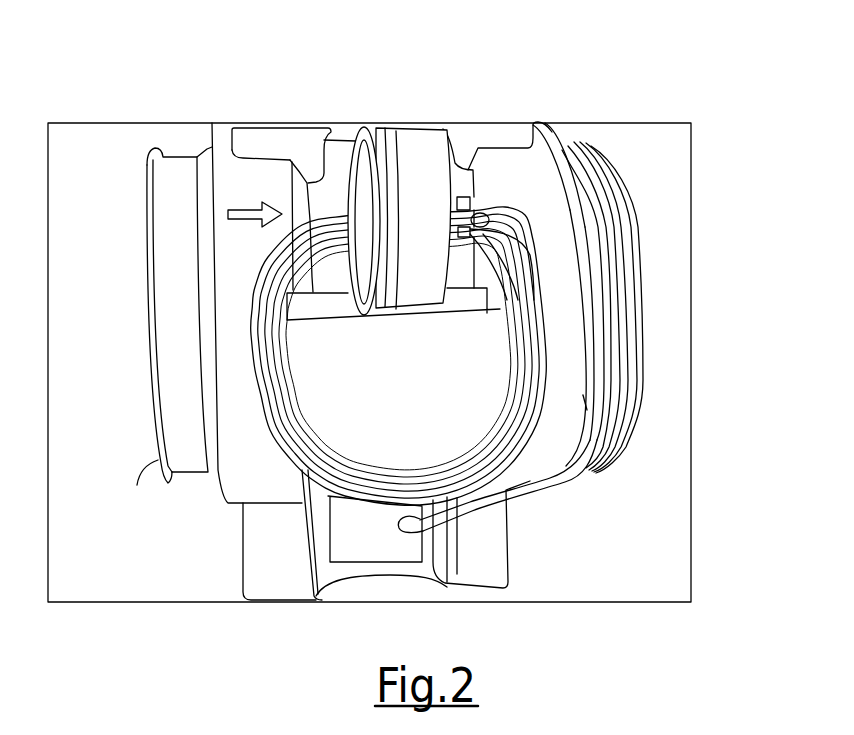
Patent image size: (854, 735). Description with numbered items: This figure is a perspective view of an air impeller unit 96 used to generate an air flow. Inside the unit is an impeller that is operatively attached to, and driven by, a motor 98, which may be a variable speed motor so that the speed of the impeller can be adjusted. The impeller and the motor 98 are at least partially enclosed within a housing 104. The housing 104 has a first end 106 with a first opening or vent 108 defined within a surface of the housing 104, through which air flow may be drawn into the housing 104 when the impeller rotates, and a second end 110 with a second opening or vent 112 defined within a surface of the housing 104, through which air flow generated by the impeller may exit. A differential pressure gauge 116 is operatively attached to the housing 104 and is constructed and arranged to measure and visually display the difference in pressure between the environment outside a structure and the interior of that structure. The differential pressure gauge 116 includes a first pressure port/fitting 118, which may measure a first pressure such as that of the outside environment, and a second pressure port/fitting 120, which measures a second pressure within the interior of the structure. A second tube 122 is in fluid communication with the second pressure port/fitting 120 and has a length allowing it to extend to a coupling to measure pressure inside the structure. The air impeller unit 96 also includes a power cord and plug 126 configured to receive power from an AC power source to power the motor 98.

The air impeller unit 96 is at (556, 110).
The motor 98 is at (347, 533).
The housing 104 is at (547, 220).
The first end 106 is at (184, 136).
The first opening or vent 108 is at (137, 485).
The second end 110 is at (566, 482).
The second opening or vent 112 is at (588, 405).
The differential pressure gauge 116 is at (384, 149).
The first pressure port/fitting 118 is at (478, 203).
The second pressure port/fitting 120 is at (464, 236).
The second tube 122 is at (512, 216).
The power cord and plug 126 is at (622, 380).